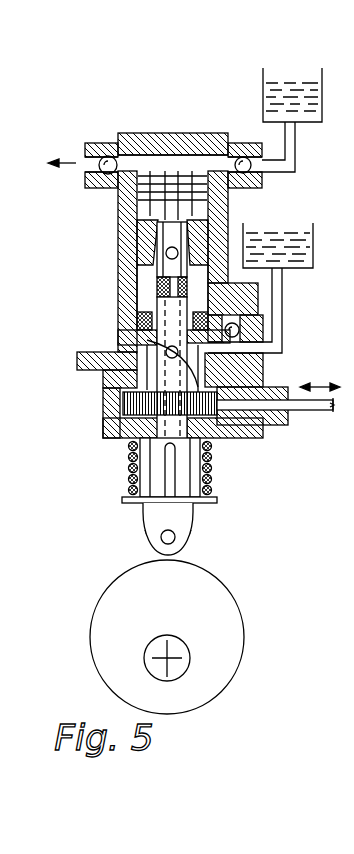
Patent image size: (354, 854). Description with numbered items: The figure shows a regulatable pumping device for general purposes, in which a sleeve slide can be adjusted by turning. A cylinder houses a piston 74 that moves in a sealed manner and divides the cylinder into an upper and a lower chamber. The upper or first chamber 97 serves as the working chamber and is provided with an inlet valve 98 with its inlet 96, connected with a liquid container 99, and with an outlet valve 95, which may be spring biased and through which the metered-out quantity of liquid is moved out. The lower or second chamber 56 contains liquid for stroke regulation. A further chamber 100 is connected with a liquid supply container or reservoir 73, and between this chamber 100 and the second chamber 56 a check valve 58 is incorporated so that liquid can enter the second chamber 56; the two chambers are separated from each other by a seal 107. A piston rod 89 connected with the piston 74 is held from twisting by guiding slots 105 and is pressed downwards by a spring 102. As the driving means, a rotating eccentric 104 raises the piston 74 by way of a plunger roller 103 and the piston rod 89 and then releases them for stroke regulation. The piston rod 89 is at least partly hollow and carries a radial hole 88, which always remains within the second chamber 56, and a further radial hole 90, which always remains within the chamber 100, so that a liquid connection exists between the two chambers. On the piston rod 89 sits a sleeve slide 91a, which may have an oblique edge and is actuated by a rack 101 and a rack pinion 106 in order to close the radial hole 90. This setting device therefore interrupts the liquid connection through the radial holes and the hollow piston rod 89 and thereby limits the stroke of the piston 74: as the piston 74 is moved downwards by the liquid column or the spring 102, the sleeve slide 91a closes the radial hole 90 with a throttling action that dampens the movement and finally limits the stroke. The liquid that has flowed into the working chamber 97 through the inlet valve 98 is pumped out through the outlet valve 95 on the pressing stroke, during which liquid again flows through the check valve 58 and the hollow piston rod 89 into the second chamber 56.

The outlet valve 95 is at (94, 136).
The inlet 96 is at (152, 133).
The first chamber 97 is at (181, 163).
The inlet valve 98 is at (247, 140).
The liquid container 99 is at (292, 109).
The piston 74 is at (148, 203).
The radial hole 88 is at (150, 245).
The piston rod 89 is at (178, 274).
The second chamber 56 is at (145, 295).
The seal 107 is at (135, 321).
The radial hole 90 is at (152, 349).
The sleeve slide 91a is at (155, 375).
The rack pinion 106 is at (120, 429).
The guiding slots 105 is at (168, 476).
The liquid supply container 73 is at (278, 233).
The check valve 58 is at (246, 330).
The chamber 100 is at (228, 348).
The rack 101 is at (292, 406).
The spring 102 is at (210, 489).
The plunger roller 103 is at (186, 541).
The rotating eccentric 104 is at (212, 591).